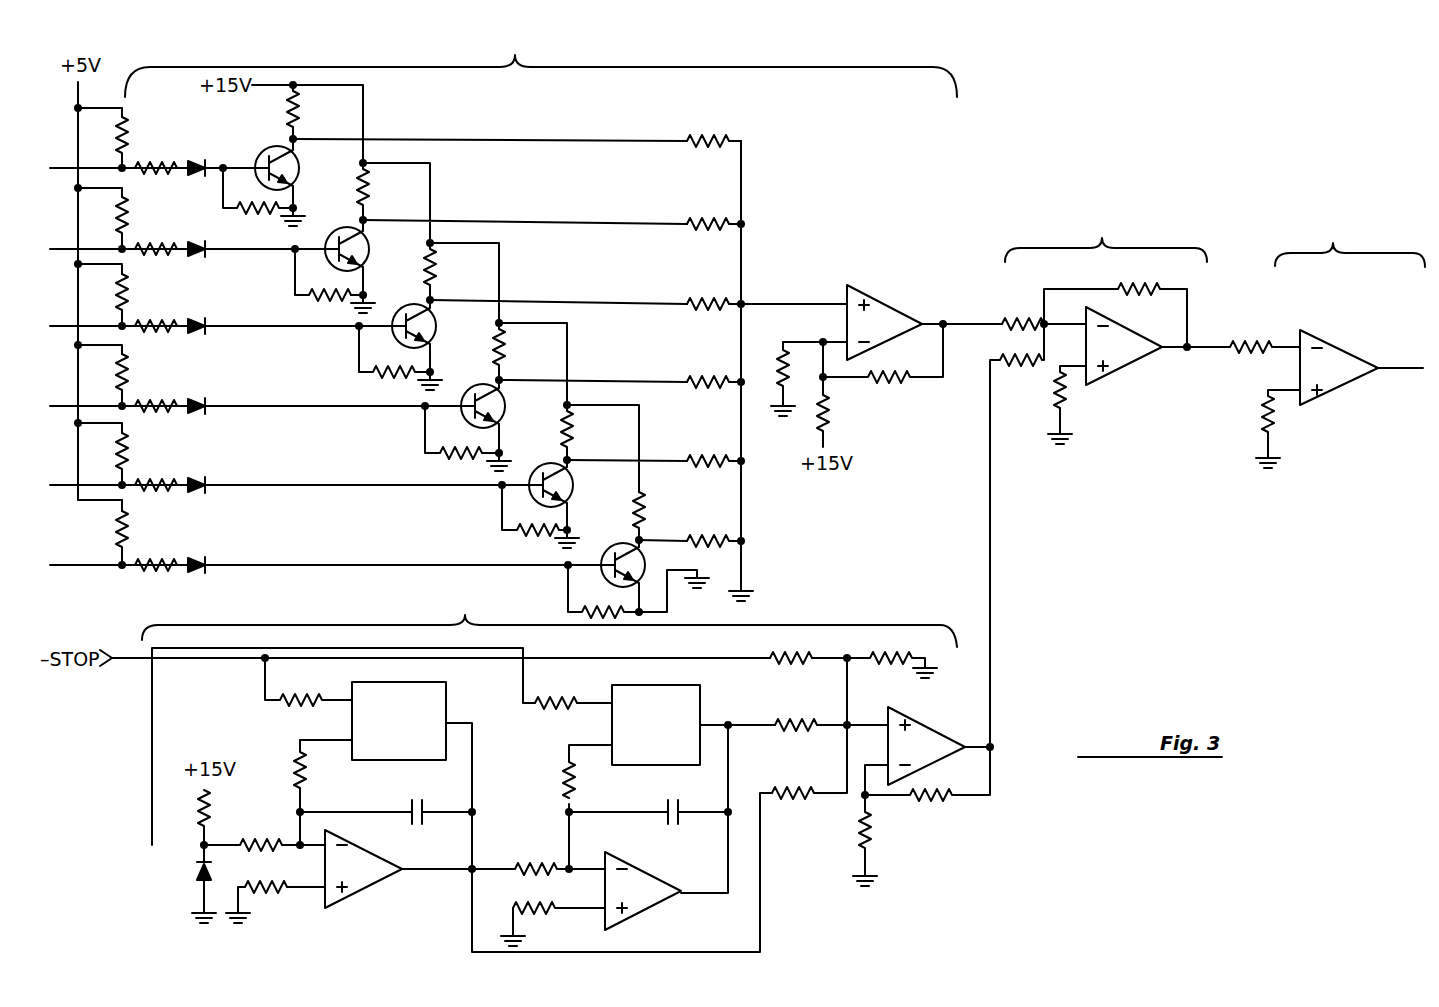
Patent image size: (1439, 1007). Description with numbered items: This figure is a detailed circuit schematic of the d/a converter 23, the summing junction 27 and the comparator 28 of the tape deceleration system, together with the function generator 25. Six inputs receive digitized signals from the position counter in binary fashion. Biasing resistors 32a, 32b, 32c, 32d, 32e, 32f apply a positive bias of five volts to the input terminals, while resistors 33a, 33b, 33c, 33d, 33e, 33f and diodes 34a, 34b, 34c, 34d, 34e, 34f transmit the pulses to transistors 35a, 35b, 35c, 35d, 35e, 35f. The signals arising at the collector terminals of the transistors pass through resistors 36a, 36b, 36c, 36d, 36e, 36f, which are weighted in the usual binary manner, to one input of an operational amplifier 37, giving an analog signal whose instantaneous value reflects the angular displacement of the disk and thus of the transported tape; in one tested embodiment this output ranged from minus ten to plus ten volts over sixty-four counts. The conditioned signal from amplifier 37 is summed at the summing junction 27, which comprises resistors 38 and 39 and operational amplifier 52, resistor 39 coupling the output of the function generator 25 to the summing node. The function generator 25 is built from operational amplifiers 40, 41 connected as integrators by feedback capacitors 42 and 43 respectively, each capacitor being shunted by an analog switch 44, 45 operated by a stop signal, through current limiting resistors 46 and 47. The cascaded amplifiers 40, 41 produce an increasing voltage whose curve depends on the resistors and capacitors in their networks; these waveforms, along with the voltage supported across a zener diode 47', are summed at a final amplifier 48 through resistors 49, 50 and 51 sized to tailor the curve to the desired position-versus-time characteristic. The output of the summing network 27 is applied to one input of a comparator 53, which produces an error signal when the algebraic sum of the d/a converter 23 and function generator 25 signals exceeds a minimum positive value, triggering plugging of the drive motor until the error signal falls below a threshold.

The d/a converter 23 is at (541, 66).
The function generator 25 is at (549, 622).
The summing junction 27 is at (1106, 237).
The comparator 28 is at (1350, 241).
The biasing resistor 32a is at (127, 126).
The biasing resistor 32b is at (127, 211).
The biasing resistor 32c is at (130, 292).
The biasing resistor 32d is at (128, 370).
The biasing resistor 32e is at (128, 446).
The biasing resistor 32f is at (126, 528).
The resistor 33a is at (148, 164).
The resistor 33b is at (158, 252).
The resistor 33c is at (170, 330).
The resistor 33d is at (172, 410).
The resistor 33e is at (166, 490).
The resistor 33f is at (152, 570).
The diode 34a is at (195, 160).
The diode 34b is at (190, 240).
The diode 34c is at (205, 318).
The diode 34d is at (206, 398).
The diode 34e is at (206, 480).
The diode 34f is at (200, 560).
The transistor 35a is at (300, 172).
The transistor 35b is at (368, 252).
The transistor 35c is at (438, 330).
The transistor 35d is at (506, 410).
The transistor 35e is at (574, 488).
The transistor 35f is at (606, 552).
The resistor 36a is at (690, 138).
The resistor 36b is at (691, 220).
The resistor 36c is at (694, 302).
The resistor 36d is at (704, 380).
The resistor 36e is at (712, 458).
The resistor 36f is at (702, 538).
The operational amplifier 37 is at (880, 300).
The resistor 38 is at (1012, 320).
The resistor 39 is at (1030, 375).
The operational amplifier 40 is at (370, 887).
The operational amplifier 41 is at (652, 886).
The feedback capacitor 42 is at (404, 800).
The feedback capacitor 43 is at (656, 800).
The analog switch 44 is at (448, 700).
The analog switch 45 is at (702, 694).
The current limiting resistor 46 is at (288, 772).
The current limiting resistor 47 is at (568, 807).
The zener diode 47' is at (178, 884).
The summing amplifier 48 is at (925, 745).
The resistor 49 is at (804, 658).
The resistor 50 is at (798, 714).
The resistor 51 is at (791, 793).
The operational amplifier 52 is at (1124, 361).
The comparator 53 is at (1335, 358).